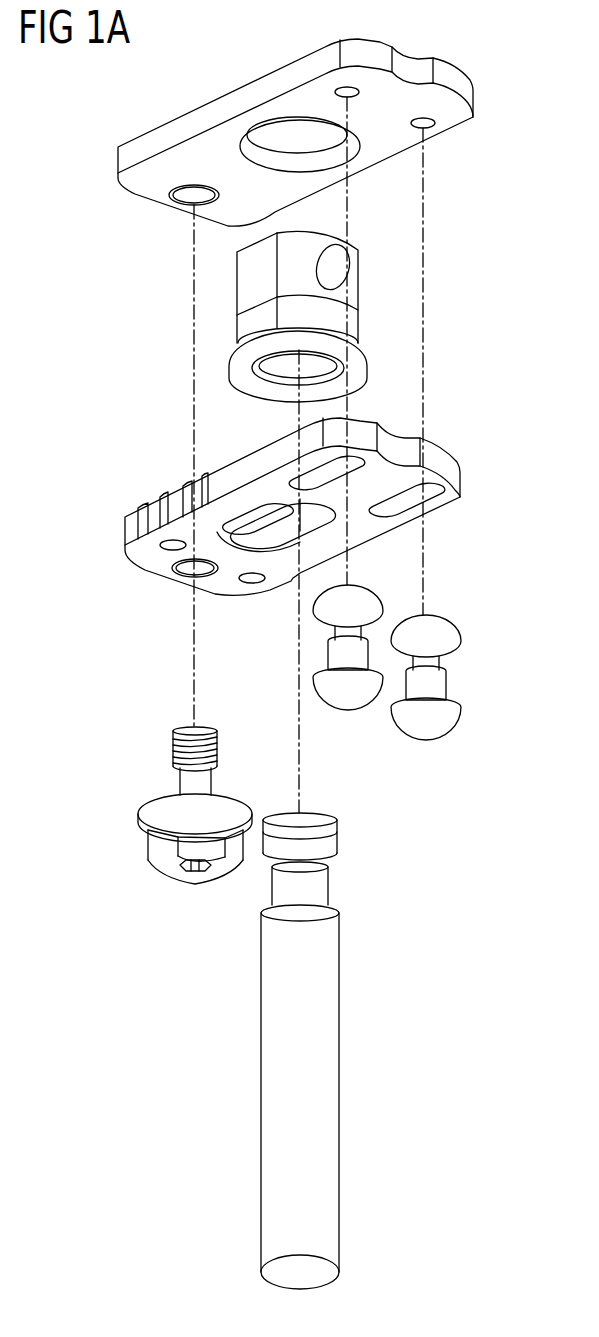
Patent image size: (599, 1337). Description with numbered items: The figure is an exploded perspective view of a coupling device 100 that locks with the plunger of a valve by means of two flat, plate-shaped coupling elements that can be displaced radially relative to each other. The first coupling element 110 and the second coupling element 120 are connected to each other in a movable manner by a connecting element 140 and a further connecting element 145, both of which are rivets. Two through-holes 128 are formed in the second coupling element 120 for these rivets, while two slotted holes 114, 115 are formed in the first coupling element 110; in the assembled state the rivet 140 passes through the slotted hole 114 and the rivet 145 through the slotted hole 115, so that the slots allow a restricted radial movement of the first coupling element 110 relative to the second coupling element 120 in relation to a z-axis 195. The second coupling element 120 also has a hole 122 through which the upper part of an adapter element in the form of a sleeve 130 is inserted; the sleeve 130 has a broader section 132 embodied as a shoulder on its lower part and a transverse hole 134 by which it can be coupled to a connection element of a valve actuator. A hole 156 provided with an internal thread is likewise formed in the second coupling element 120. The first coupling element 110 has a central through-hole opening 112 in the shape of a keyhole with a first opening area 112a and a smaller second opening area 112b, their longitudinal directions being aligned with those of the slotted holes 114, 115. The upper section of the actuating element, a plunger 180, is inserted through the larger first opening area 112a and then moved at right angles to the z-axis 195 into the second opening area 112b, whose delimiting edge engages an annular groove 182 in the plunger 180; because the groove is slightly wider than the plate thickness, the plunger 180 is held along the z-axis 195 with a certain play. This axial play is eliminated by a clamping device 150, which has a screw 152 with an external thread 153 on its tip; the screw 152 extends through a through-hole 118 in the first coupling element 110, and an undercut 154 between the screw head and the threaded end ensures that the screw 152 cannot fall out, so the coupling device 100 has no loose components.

The coupling device 100 is at (493, 58).
The first coupling element 110 is at (130, 528).
The through-hole opening 112 is at (279, 545).
The first opening area 112a is at (234, 550).
The second opening area 112b is at (290, 489).
The slotted hole 114 is at (355, 468).
The slotted hole 115 is at (430, 498).
The through-hole 118 is at (182, 578).
The second coupling element 120 is at (118, 157).
The hole 122 is at (270, 153).
The through-holes 128 is at (348, 98).
The sleeve 130 is at (247, 290).
The broader section 132 is at (360, 358).
The transverse hole 134 is at (337, 278).
The connecting element 140 is at (348, 703).
The further connecting element 145 is at (427, 731).
The clamping device 150 is at (110, 823).
The screw 152 is at (158, 848).
The external thread 153 is at (172, 748).
The undercut 154 is at (183, 781).
The hole 156 is at (182, 204).
The plunger 180 is at (327, 1030).
The annular groove 182 is at (317, 880).
The z-axis 195 is at (299, 716).